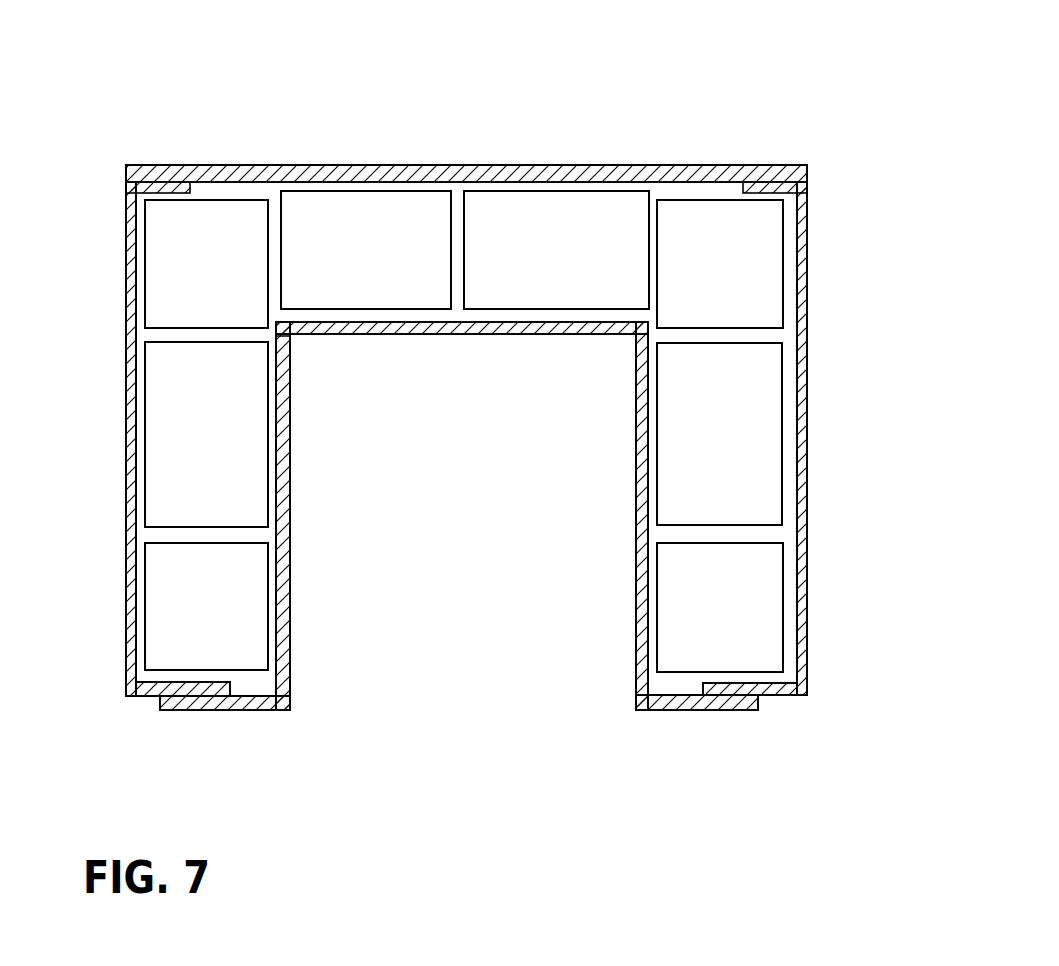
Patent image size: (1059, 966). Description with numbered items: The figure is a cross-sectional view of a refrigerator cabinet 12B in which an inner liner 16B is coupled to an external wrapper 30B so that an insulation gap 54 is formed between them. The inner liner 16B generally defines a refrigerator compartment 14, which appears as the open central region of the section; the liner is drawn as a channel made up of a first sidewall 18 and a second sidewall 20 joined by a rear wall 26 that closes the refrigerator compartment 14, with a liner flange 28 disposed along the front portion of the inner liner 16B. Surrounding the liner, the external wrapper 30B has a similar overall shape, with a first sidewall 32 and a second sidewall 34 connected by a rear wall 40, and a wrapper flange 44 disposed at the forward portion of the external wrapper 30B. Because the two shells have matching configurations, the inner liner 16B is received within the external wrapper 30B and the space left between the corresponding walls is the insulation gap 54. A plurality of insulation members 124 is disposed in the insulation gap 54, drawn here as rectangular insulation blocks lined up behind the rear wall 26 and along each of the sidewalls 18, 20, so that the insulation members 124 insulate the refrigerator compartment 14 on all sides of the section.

The refrigerator cabinet 12B is at (677, 95).
The external wrapper 30B is at (467, 163).
The rear wall 40 is at (303, 165).
The first sidewall 32 is at (127, 556).
The second sidewall 34 is at (808, 532).
The wrapper flange 44 is at (185, 693).
The liner flange 28 is at (218, 700).
The inner liner 16B is at (427, 335).
The first sidewall 18 is at (290, 452).
The second sidewall 20 is at (636, 548).
The rear wall 26 is at (474, 332).
The insulation gap 54 is at (264, 341).
The refrigerator compartment 14 is at (443, 550).
The insulation members 124 is at (387, 225).